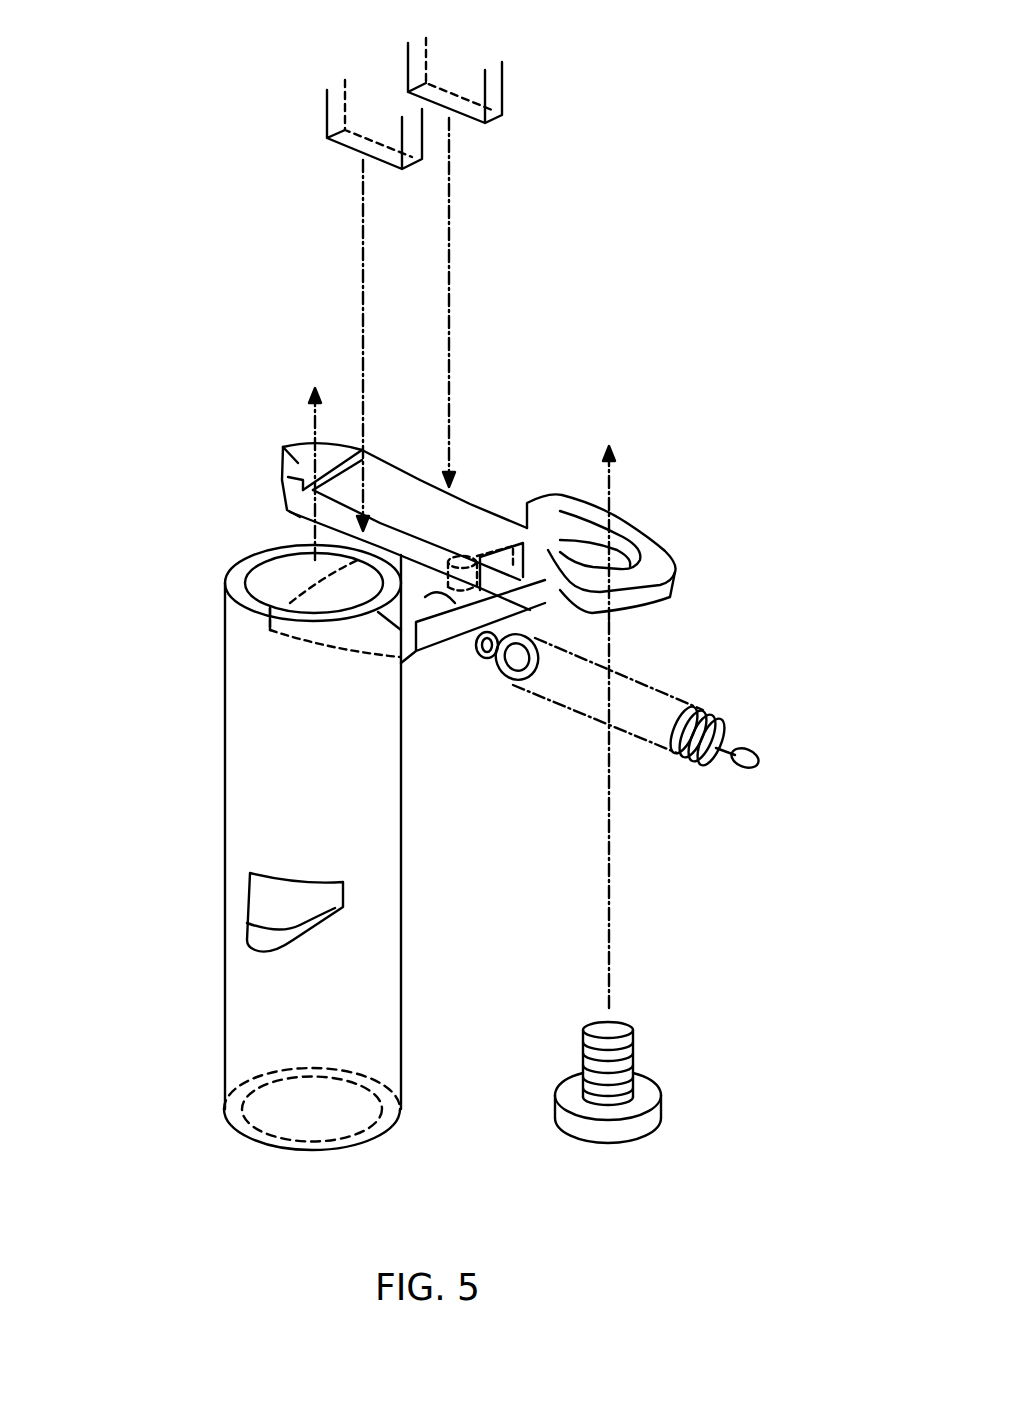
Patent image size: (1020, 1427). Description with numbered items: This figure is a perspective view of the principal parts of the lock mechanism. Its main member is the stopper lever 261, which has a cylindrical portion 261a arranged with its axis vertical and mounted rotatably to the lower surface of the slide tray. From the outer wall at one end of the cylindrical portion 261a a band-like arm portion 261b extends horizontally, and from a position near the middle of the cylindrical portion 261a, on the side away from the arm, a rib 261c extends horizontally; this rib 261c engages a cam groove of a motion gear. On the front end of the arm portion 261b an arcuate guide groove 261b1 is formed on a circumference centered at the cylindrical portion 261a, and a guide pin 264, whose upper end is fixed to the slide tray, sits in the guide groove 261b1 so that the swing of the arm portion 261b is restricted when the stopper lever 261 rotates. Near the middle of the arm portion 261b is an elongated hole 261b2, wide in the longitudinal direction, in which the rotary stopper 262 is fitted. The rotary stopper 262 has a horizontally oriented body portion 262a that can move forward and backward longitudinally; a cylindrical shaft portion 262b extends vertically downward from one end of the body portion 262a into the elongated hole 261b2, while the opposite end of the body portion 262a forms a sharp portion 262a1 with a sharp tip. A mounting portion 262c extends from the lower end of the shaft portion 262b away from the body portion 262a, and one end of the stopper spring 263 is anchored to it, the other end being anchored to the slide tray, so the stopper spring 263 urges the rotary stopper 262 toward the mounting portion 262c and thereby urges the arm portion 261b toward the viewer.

The stopper lever 261 is at (583, 856).
The cylindrical portion 261a is at (375, 817).
The arm portion 261b is at (453, 600).
The guide groove 261b1 is at (623, 548).
The elongated hole 261b2 is at (440, 565).
The rib 261c is at (280, 912).
The rotary stopper 262 is at (695, 366).
The body portion 262a is at (457, 517).
The sharp portion 262a1 is at (297, 462).
The shaft portion 262b is at (525, 560).
The mounting portion 262c is at (575, 497).
The stopper spring 263 is at (707, 710).
The guide pin 264 is at (650, 1130).